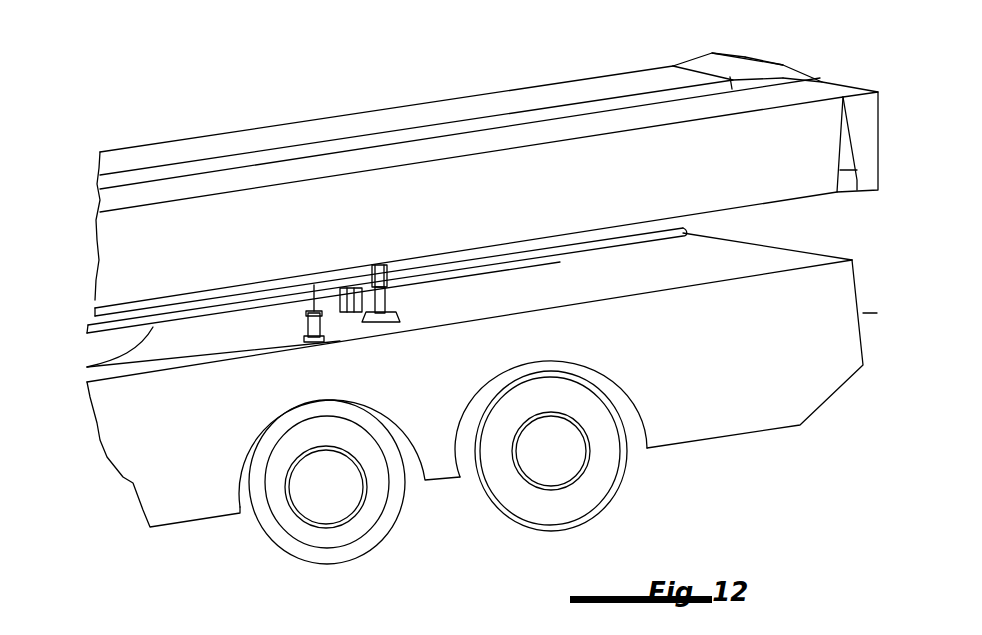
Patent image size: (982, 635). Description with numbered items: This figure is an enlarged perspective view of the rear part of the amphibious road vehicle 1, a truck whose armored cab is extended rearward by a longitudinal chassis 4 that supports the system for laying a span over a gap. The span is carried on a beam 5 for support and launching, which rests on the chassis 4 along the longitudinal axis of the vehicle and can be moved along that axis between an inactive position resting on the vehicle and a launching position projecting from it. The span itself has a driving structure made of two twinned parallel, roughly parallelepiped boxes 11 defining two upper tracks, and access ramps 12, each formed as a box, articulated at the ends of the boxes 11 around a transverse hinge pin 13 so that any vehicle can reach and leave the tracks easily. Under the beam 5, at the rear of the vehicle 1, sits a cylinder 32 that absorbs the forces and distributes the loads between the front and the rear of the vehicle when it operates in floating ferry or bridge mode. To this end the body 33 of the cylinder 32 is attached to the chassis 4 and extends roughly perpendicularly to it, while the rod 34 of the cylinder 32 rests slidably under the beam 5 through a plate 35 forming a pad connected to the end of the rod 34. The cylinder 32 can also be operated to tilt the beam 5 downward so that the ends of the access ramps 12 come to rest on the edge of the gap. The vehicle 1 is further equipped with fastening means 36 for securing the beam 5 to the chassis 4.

The road vehicle 1 is at (125, 488).
The longitudinal chassis 4 is at (740, 267).
The beam 5 is at (127, 307).
The boxes 11 is at (492, 195).
The access ramps 12 is at (742, 67).
The transverse hinge pin 13 is at (685, 70).
The cylinder 32 is at (304, 328).
The body 33 is at (323, 328).
The rod 34 is at (303, 307).
The plate 35 is at (313, 307).
The fastening means 36 is at (401, 294).